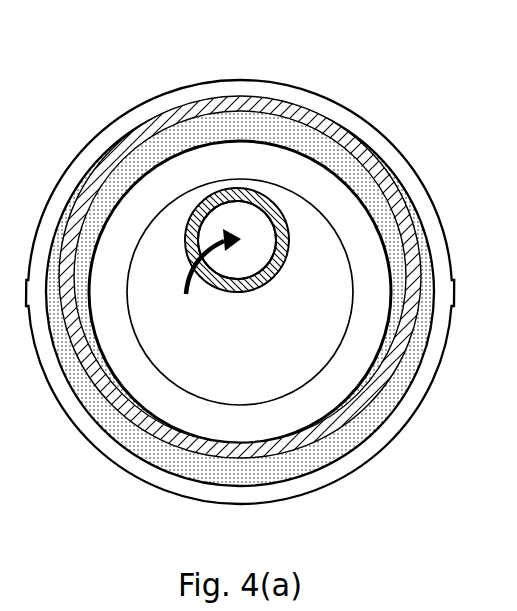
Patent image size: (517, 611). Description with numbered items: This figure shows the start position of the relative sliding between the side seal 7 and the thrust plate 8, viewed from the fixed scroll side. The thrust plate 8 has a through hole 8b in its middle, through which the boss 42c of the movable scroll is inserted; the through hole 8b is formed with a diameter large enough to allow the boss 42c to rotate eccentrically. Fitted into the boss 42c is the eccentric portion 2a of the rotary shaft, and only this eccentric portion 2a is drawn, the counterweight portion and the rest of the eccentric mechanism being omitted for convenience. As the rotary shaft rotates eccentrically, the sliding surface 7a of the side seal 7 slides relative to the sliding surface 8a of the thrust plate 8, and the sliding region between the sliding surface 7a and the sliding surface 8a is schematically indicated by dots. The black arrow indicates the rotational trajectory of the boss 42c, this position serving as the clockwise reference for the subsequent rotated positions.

The thrust plate 8 is at (198, 71).
The sliding surface of the thrust plate 8a is at (233, 92).
The through hole 8b is at (149, 356).
The side seal 7 is at (303, 88).
The sliding surface of the side seal 7a is at (350, 130).
The eccentric portion 2a is at (229, 263).
The boss 42c is at (287, 264).